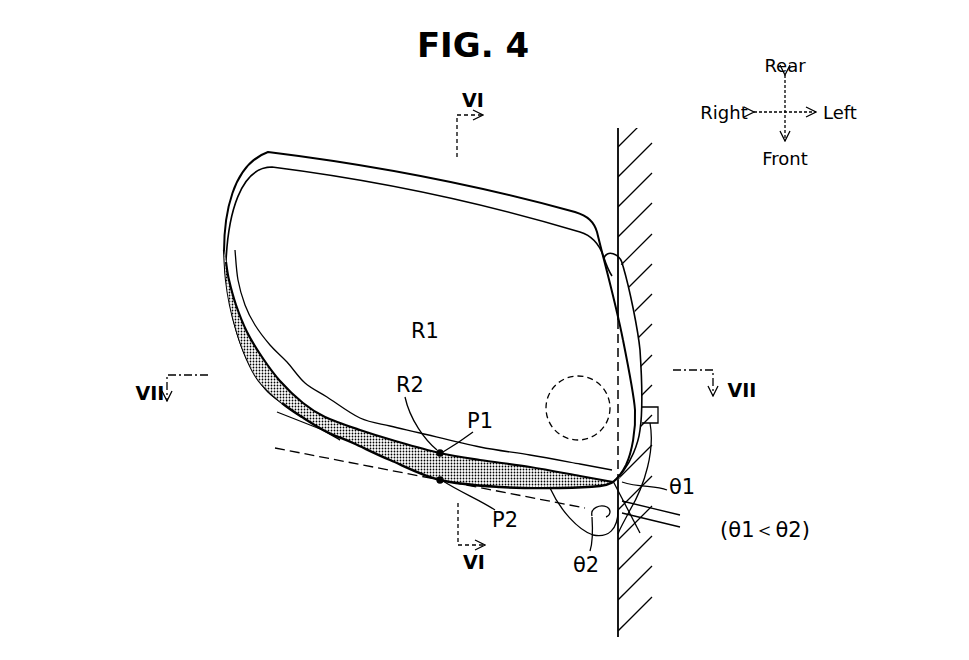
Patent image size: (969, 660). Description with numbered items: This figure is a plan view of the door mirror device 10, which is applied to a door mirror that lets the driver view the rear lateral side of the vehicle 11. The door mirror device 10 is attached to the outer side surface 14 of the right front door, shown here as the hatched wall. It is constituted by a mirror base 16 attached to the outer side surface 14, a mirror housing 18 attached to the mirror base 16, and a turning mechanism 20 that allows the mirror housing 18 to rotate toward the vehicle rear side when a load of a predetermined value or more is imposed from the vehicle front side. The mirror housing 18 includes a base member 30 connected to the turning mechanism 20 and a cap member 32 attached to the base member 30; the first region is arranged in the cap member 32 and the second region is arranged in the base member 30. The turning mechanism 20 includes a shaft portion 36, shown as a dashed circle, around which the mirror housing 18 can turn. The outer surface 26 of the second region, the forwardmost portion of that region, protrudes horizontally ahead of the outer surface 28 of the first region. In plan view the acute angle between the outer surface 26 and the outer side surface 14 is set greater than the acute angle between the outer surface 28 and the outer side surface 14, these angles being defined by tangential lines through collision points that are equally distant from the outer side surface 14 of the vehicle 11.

The door mirror device 10 is at (185, 540).
The vehicle 11 is at (596, 357).
The outer side surface 14 is at (618, 590).
The mirror base 16 is at (642, 463).
The mirror housing 18 is at (225, 258).
The turning mechanism 20 is at (598, 372).
The outer surface of the second region 26 is at (423, 479).
The outer surface of the first region 28 is at (390, 422).
The base member 30 is at (418, 409).
The cap member 32 is at (308, 197).
The shaft portion 36 is at (572, 376).